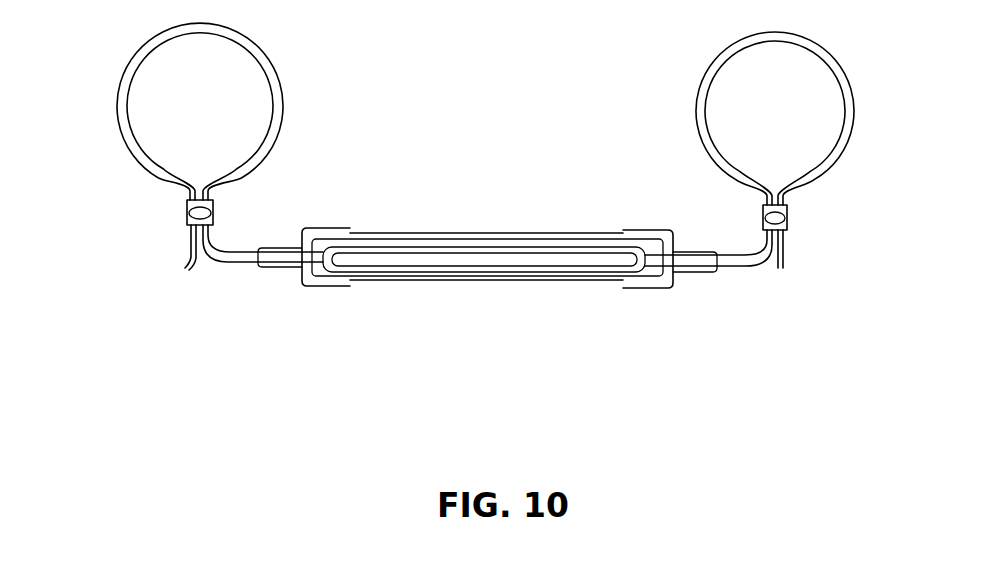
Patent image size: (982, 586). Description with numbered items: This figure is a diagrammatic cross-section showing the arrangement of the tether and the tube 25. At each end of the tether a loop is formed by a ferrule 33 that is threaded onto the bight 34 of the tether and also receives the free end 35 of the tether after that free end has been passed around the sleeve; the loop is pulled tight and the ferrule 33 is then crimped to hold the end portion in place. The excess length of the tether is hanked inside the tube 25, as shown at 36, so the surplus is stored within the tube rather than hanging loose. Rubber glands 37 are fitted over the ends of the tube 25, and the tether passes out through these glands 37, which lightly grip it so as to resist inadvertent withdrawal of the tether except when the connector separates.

The tube 25 is at (452, 285).
The ferrule 33 is at (186, 212).
The bight 34 is at (282, 111).
The free end 35 is at (190, 260).
The hanked excess length of the tether 36 is at (470, 262).
The rubber glands 37 is at (297, 277).